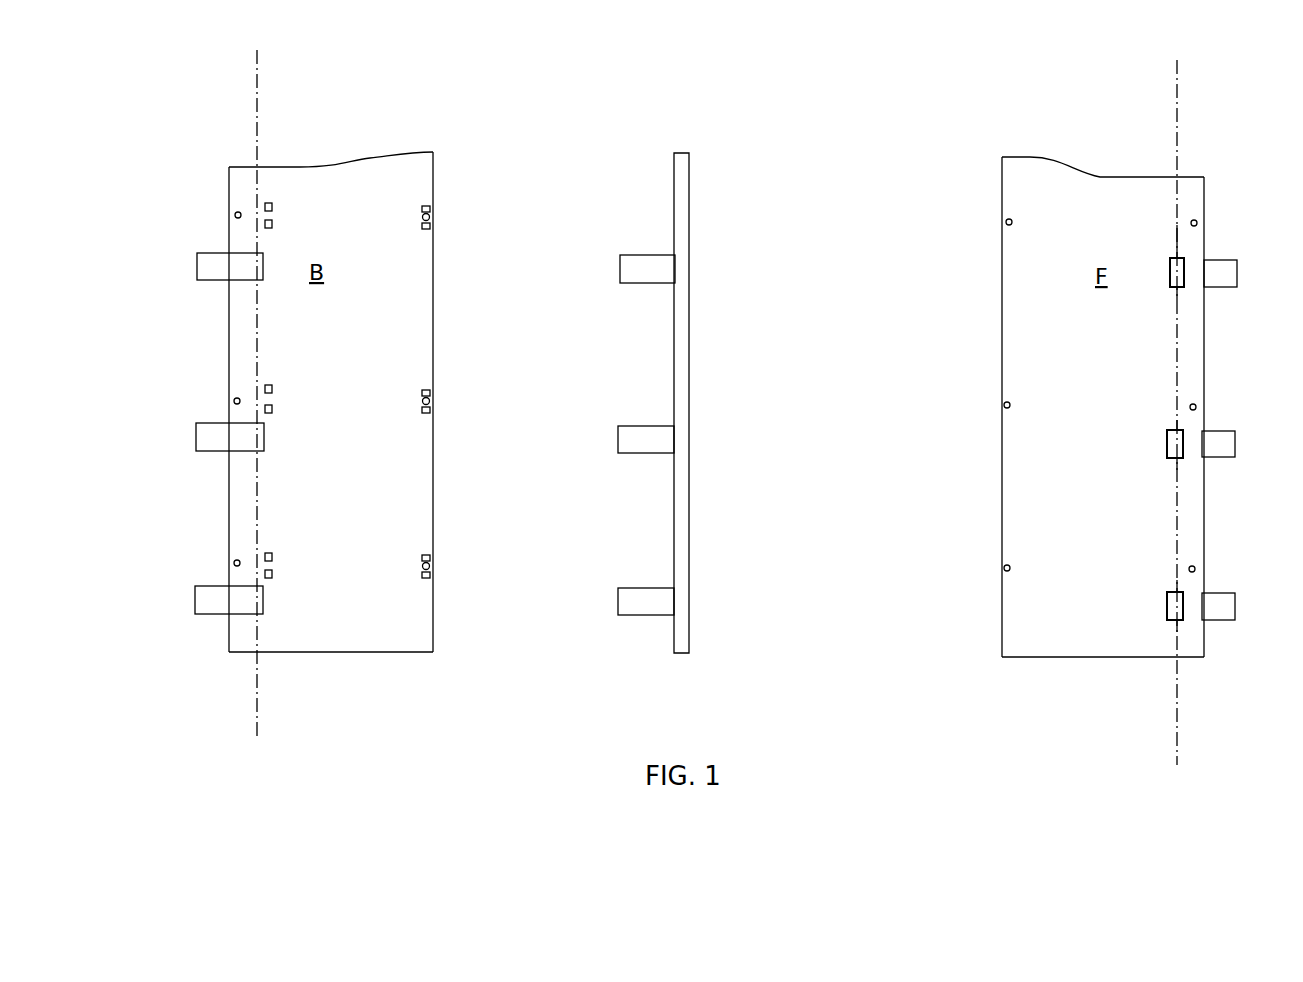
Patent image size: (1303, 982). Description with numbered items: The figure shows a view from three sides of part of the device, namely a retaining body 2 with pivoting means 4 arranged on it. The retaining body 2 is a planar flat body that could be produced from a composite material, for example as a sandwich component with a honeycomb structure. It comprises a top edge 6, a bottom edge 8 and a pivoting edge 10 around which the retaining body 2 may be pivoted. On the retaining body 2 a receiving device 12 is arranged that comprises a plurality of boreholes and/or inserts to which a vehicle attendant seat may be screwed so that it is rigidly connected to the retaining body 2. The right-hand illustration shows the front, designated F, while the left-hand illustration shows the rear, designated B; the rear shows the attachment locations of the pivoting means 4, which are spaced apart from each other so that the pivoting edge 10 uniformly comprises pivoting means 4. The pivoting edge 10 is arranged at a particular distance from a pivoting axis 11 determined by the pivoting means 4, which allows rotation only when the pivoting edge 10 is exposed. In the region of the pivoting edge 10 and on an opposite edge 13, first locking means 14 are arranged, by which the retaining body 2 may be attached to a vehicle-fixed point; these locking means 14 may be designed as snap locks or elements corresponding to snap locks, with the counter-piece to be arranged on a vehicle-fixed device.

The retaining body 2 is at (370, 176).
The pivoting means 4 is at (213, 262).
The top edge 6 is at (443, 144).
The bottom edge 8 is at (372, 664).
The pivoting edge 10 is at (224, 188).
The pivoting axis 11 is at (257, 52).
The receiving device 12 is at (458, 218).
The edge opposite the pivoting edge 13 is at (447, 303).
The first locking means 14 is at (433, 197).